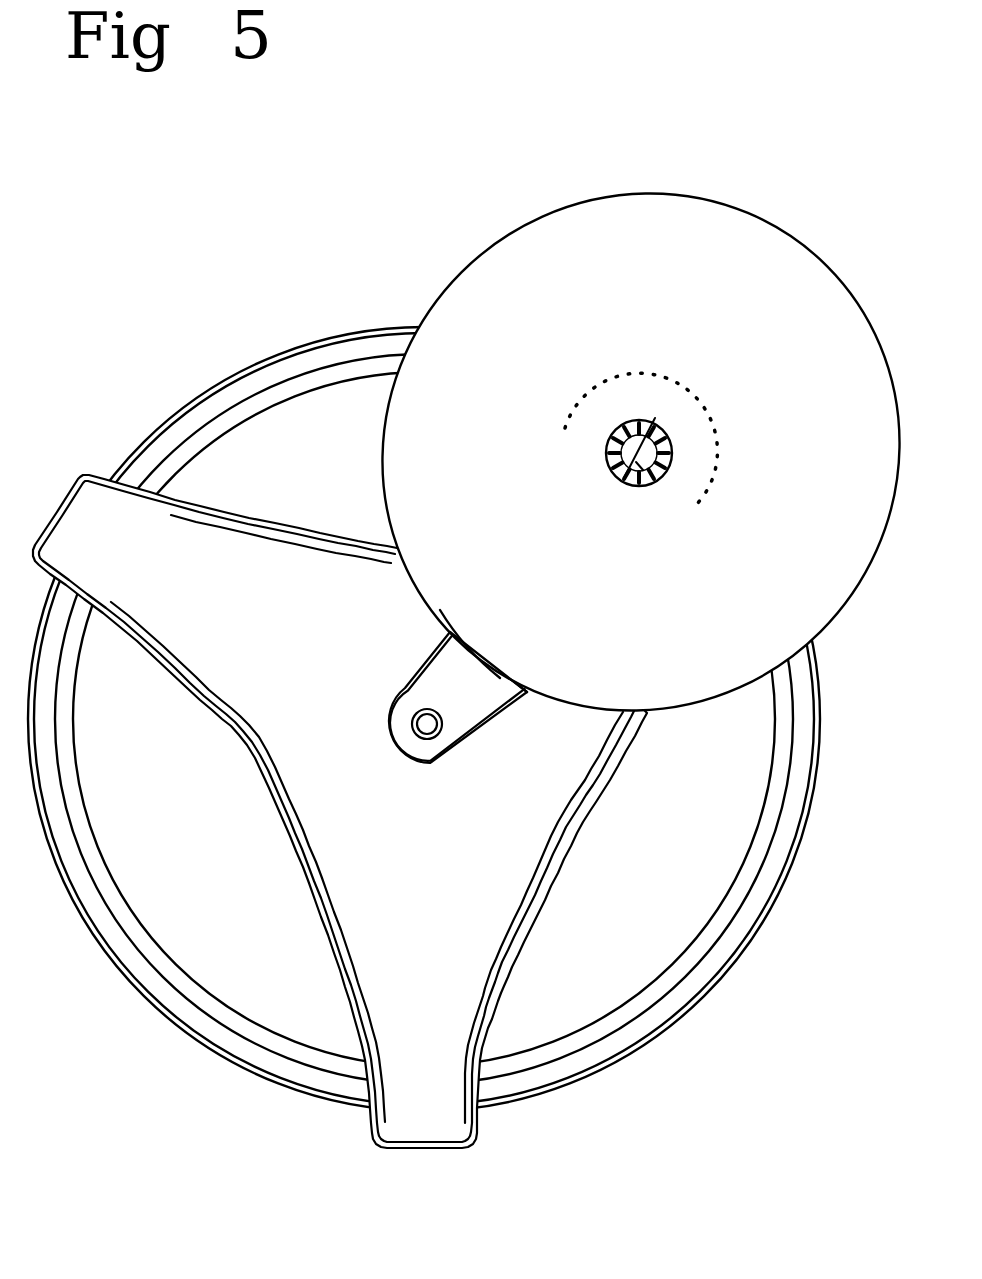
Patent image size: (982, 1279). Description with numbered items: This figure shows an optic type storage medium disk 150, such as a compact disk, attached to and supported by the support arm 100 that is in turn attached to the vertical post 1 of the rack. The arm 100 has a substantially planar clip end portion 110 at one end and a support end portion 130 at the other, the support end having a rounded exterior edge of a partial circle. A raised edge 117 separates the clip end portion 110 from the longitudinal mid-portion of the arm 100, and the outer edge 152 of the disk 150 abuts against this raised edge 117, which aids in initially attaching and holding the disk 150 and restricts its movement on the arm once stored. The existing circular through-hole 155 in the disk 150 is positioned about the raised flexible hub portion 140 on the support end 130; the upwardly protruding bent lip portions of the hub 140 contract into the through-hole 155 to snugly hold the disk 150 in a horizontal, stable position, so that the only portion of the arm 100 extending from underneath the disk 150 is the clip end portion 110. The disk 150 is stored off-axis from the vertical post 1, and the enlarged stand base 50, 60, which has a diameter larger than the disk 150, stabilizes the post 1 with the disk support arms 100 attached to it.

The post 1 is at (424, 726).
The stand base 50 is at (714, 985).
The stand base 60 is at (447, 943).
The support arm 100 is at (453, 798).
The clip end portion 110 is at (453, 715).
The raised edge 117 is at (498, 684).
The support end portion 130 is at (610, 402).
The raised hub portion 140 is at (655, 482).
The disk 150 is at (647, 158).
The outer edge 152 is at (483, 660).
The circular through-hole 155 is at (655, 420).